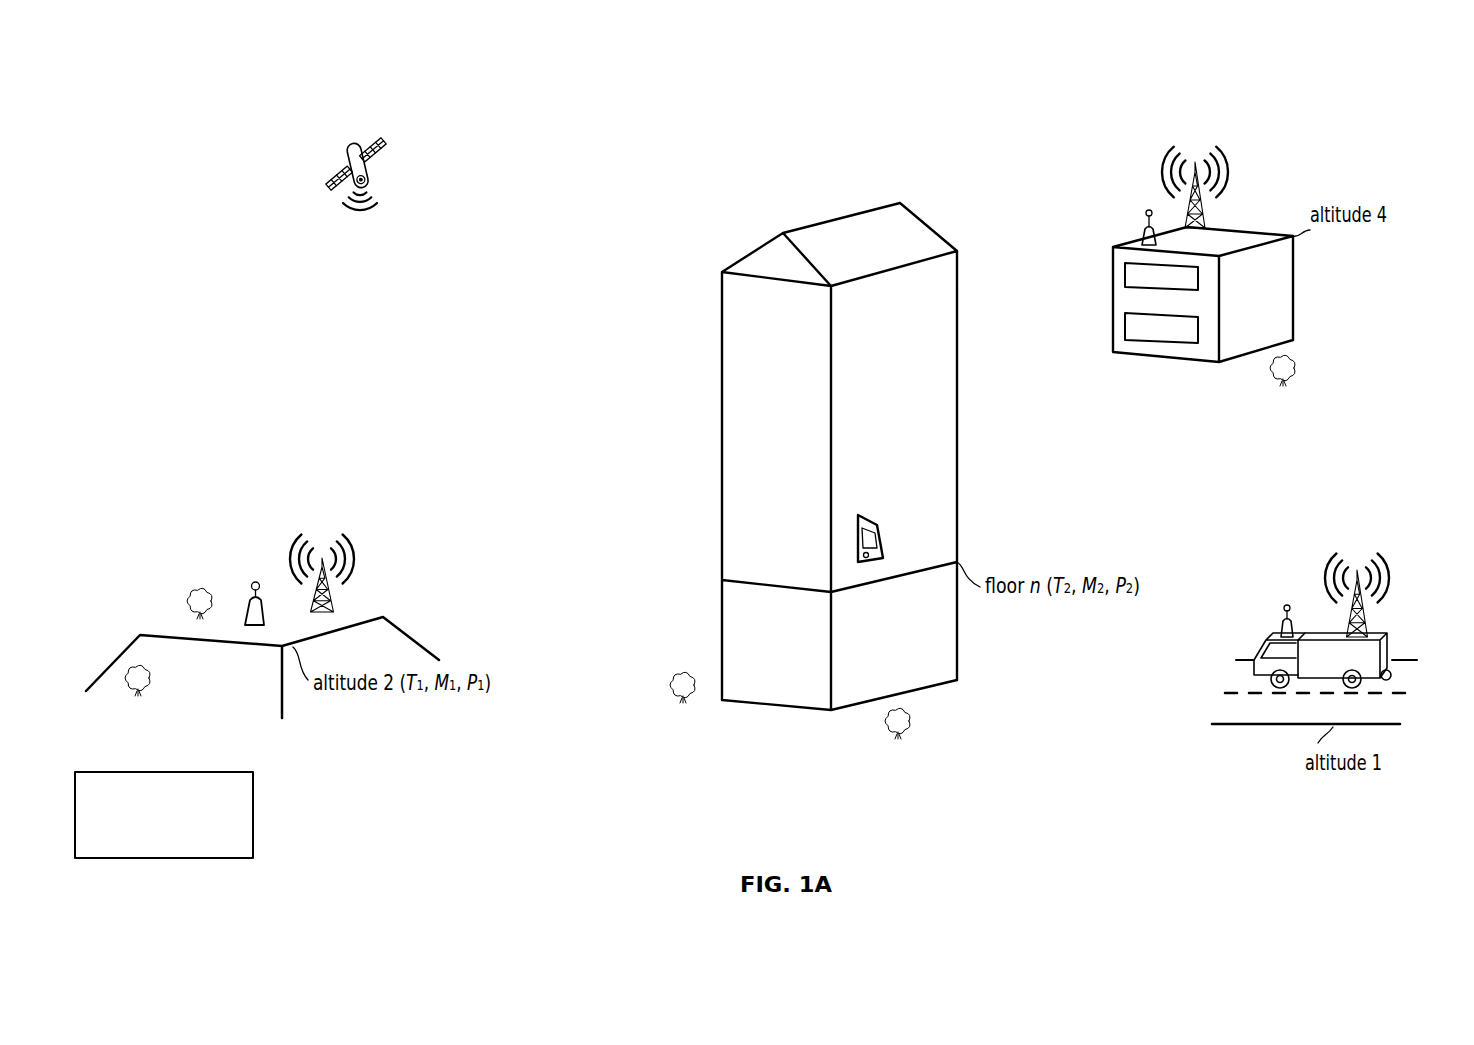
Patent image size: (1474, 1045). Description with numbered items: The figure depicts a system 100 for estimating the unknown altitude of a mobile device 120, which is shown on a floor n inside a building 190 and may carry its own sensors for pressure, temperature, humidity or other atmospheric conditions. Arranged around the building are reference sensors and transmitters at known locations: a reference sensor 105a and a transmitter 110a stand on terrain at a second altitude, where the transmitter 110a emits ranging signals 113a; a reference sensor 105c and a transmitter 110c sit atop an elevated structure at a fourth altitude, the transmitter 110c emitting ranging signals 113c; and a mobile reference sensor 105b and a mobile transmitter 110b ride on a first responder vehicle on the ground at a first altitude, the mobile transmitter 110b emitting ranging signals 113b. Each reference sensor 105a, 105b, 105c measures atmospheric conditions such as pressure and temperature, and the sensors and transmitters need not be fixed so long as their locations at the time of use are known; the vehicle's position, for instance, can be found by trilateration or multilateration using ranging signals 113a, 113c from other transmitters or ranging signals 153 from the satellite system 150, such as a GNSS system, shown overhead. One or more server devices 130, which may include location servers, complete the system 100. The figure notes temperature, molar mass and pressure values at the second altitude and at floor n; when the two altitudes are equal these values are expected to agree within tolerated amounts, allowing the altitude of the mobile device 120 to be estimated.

The system 100 is at (107, 81).
The satellite system 150 is at (375, 127).
The ranging signals 153 is at (380, 202).
The reference sensor 105a is at (256, 582).
The ranging signals 113a is at (350, 545).
The transmitter 110a is at (336, 607).
The mobile device 120 is at (878, 517).
The building 190 is at (773, 705).
The server devices 130 is at (164, 815).
The reference sensor 105c is at (1145, 212).
The ranging signals 113c is at (1227, 162).
The transmitter 110c is at (1205, 208).
The mobile reference sensor 105b is at (1278, 612).
The ranging signals 113b is at (1390, 568).
The mobile transmitter 110b is at (1368, 618).